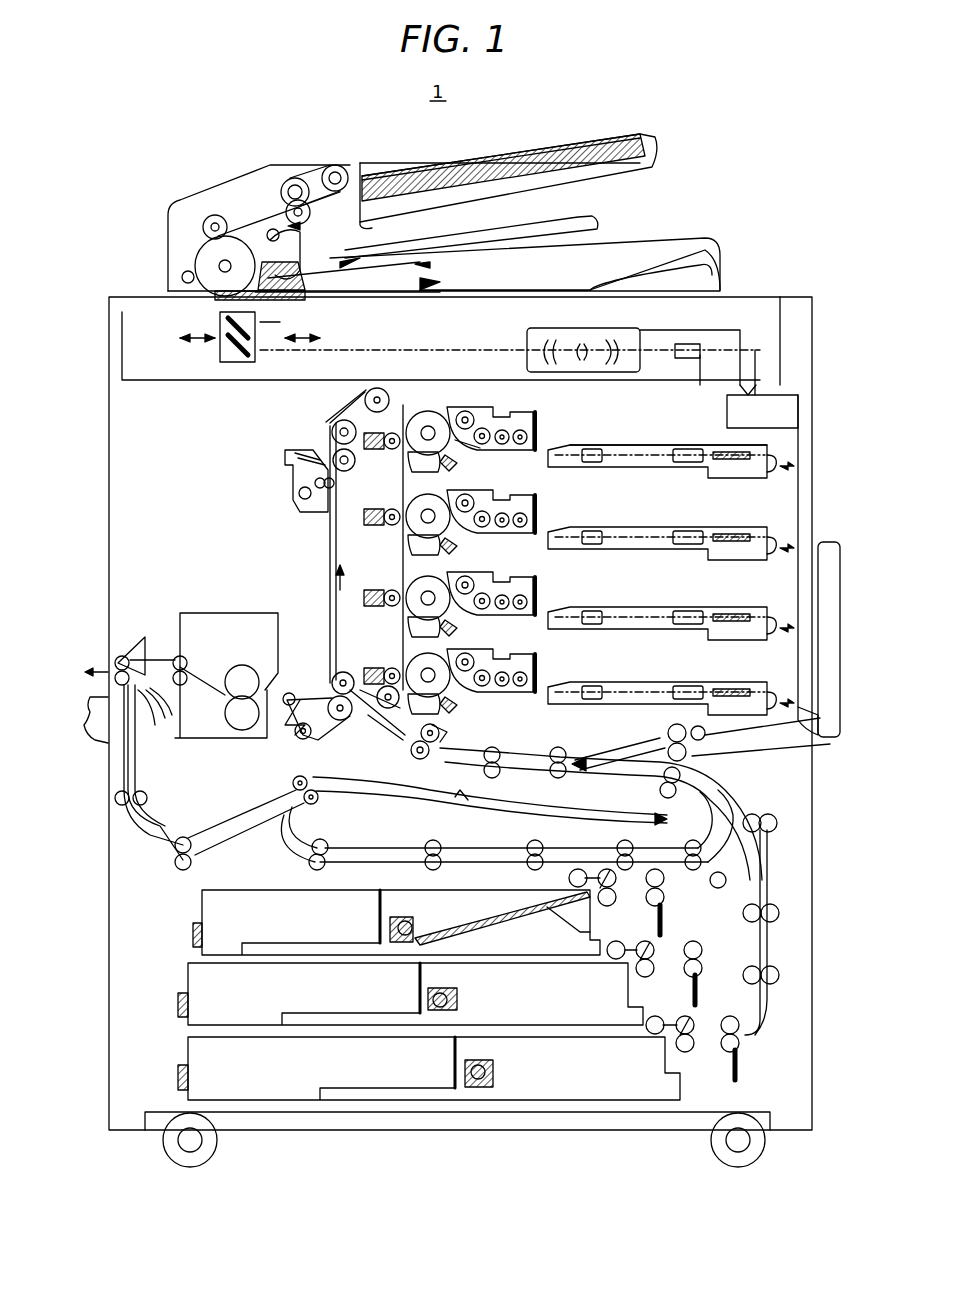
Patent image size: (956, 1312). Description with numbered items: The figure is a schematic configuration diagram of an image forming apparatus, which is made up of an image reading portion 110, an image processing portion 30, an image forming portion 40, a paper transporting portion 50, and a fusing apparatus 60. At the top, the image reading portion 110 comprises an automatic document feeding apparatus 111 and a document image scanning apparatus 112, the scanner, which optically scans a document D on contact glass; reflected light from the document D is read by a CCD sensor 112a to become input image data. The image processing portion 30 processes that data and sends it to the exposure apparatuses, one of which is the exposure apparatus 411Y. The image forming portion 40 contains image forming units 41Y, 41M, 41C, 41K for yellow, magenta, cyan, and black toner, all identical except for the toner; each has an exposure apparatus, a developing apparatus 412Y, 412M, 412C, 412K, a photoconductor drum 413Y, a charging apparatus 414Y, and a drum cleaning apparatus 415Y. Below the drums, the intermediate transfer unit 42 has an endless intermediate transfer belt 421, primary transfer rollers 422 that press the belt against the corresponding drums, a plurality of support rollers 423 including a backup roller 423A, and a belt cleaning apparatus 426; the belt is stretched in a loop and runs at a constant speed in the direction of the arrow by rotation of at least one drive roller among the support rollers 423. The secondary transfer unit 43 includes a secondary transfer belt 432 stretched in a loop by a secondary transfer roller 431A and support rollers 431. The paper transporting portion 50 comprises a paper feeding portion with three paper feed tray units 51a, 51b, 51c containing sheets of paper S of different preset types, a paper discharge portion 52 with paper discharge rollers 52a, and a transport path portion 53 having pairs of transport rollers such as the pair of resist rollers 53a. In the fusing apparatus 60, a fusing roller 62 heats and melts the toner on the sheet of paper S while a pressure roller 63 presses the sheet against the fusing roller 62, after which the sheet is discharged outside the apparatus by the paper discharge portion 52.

The image reading portion 110 is at (110, 200).
The automatic document feeding apparatus 111 is at (163, 207).
The document image scanning apparatus 112 is at (132, 292).
The CCD sensor 112a is at (700, 350).
The document D is at (522, 150).
The image processing portion 30 is at (800, 414).
The image forming portion 40 is at (768, 489).
The image forming unit 41Y is at (555, 480).
The image forming unit 41M is at (540, 560).
The image forming unit 41C is at (540, 638).
The image forming unit 41K is at (540, 708).
The exposure apparatus 411Y is at (650, 444).
The developing apparatus 412Y is at (515, 418).
The developing apparatus 412M is at (470, 522).
The developing apparatus 412C is at (470, 604).
The developing apparatus 412K is at (470, 681).
The photoconductor drum 413Y is at (404, 396).
The charging apparatus 414Y is at (462, 460).
The drum cleaning apparatus 415Y is at (392, 480).
The intermediate transfer unit 42 is at (275, 470).
The intermediate transfer belt 421 is at (330, 524).
The primary transfer rollers 422 is at (352, 466).
The support rollers 423 is at (328, 424).
The backup roller 423A is at (332, 672).
The belt cleaning apparatus 426 is at (298, 492).
The secondary transfer unit 43 is at (330, 740).
The support rollers 431 is at (328, 725).
The secondary transfer roller 431A is at (333, 698).
The secondary transfer belt 432 is at (312, 762).
The paper transporting portion 50 is at (775, 945).
The paper feed tray unit 51a is at (195, 922).
The paper feed tray unit 51b is at (195, 990).
The paper feed tray unit 51c is at (195, 1062).
The sheet of paper S is at (495, 900).
The paper discharge portion 52 is at (103, 658).
The paper discharge rollers 52a is at (135, 650).
The transport path portion 53 is at (500, 753).
The pair of resist rollers 53a is at (451, 739).
The fusing apparatus 60 is at (230, 612).
The fusing roller 62 is at (238, 666).
The pressure roller 63 is at (244, 730).